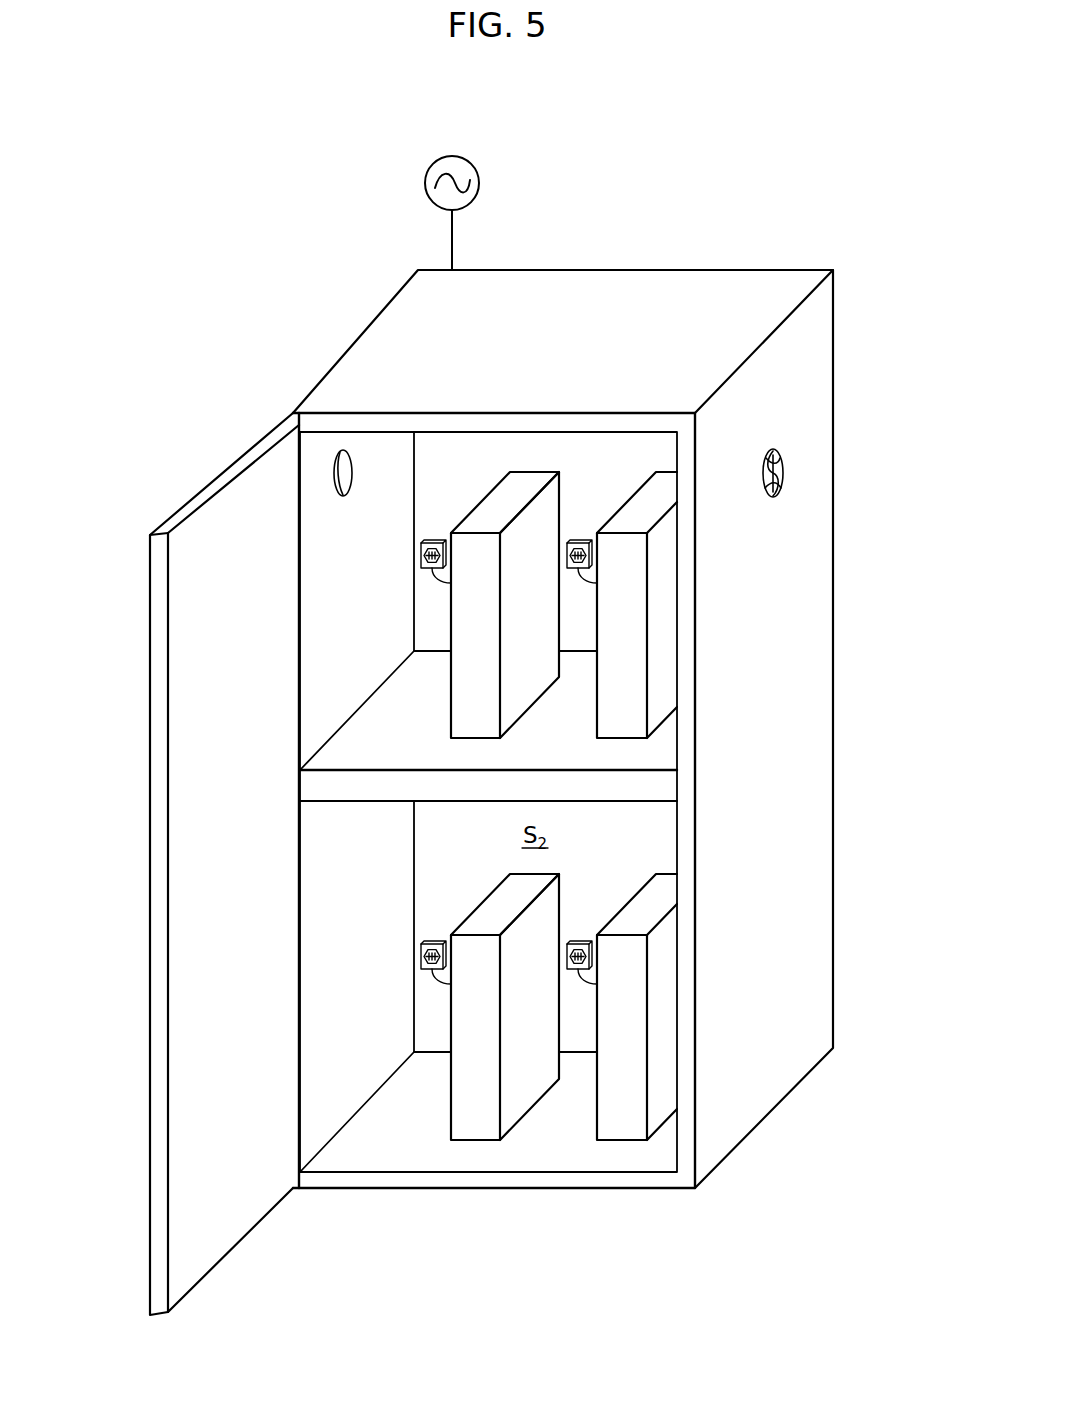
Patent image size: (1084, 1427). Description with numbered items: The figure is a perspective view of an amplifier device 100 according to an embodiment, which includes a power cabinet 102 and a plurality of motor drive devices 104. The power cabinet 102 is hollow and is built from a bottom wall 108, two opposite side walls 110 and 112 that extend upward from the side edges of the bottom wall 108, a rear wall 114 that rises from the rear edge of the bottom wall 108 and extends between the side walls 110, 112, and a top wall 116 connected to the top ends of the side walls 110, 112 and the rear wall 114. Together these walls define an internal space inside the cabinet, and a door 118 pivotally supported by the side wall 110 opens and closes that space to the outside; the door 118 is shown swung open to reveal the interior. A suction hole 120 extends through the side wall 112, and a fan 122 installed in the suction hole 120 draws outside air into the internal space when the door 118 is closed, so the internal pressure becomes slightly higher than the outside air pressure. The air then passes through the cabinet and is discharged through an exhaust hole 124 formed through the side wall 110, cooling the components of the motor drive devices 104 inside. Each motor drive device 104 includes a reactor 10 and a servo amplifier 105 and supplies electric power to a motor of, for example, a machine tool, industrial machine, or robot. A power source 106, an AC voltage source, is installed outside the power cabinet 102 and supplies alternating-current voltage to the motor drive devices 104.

The amplifier device 100 is at (246, 200).
The power cabinet 102 is at (609, 732).
The motor drive device 104 is at (533, 771).
The servo amplifier 105 is at (456, 644).
The power source 106 is at (461, 158).
The bottom wall 108 is at (612, 1180).
The side wall 110 is at (322, 553).
The side wall 112 is at (765, 598).
The rear wall 114 is at (572, 460).
The top wall 116 is at (518, 312).
The door 118 is at (152, 1025).
The suction hole 120 is at (843, 473).
The fan 122 is at (781, 478).
The exhaust hole 124 is at (357, 449).
The reactor 10 is at (431, 538).